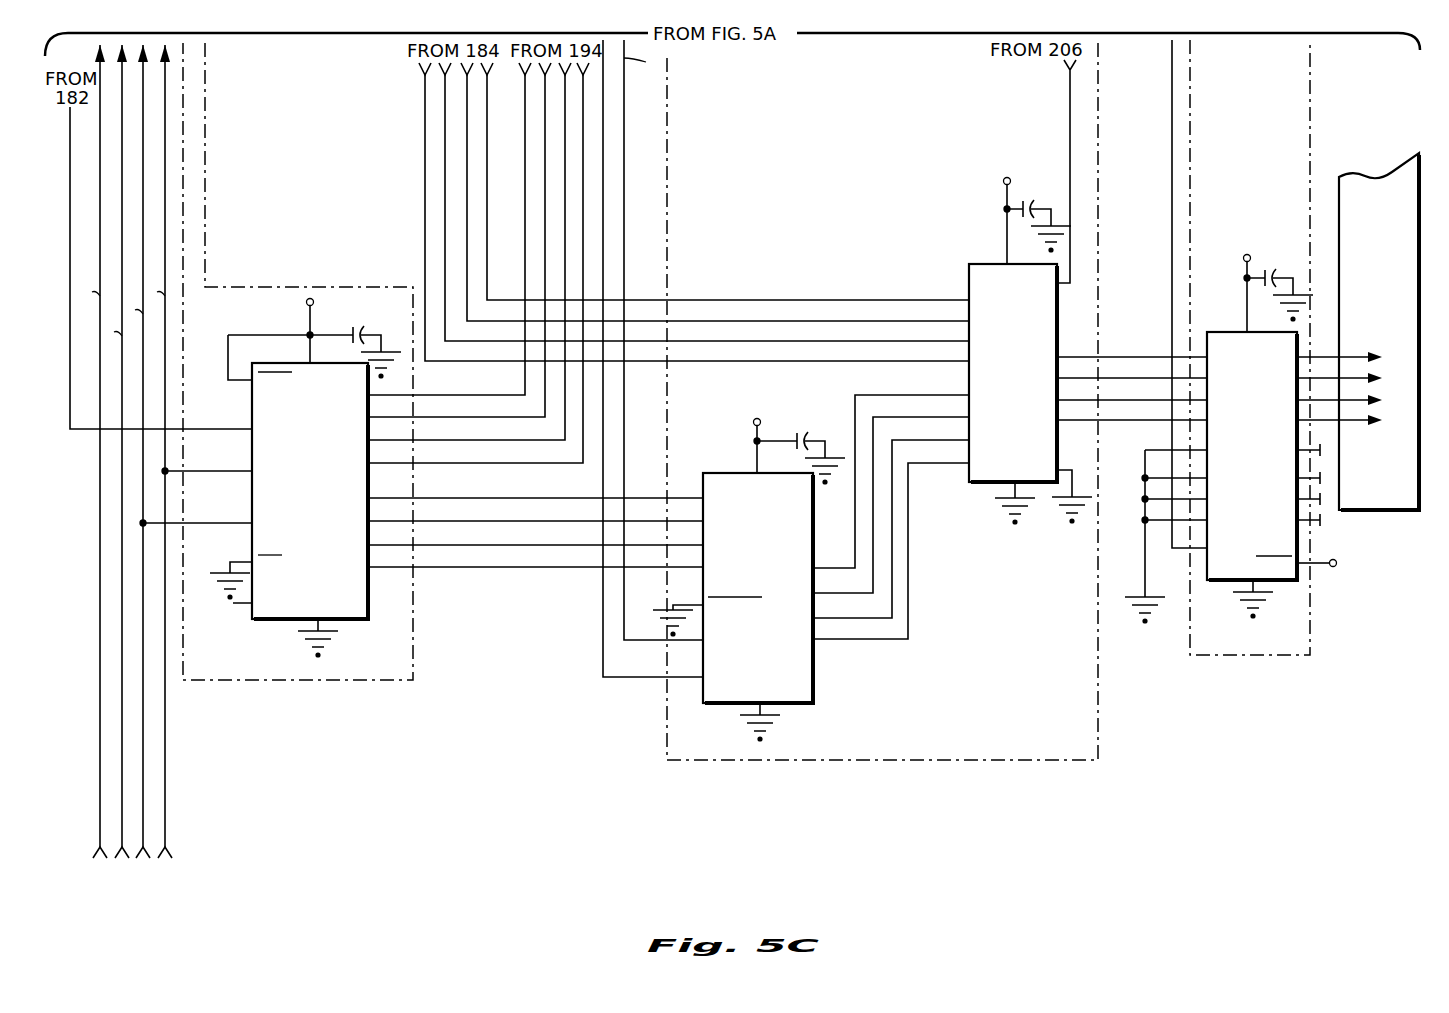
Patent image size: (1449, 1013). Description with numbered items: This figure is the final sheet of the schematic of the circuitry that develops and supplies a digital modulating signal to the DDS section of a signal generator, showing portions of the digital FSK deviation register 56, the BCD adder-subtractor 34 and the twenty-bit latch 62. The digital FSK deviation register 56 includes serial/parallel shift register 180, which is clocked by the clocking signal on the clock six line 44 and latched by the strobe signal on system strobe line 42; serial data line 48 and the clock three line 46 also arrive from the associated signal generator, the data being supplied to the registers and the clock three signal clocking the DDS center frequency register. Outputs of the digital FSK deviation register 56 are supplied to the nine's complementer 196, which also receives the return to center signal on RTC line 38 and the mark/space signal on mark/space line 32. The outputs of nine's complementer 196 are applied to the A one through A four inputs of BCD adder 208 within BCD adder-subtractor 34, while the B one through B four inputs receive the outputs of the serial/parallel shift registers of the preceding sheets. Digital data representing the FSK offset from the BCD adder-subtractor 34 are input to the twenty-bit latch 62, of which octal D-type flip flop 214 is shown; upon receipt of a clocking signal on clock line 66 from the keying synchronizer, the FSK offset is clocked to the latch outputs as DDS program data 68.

The mark/space line 32 is at (624, 94).
The BCD adder-subtractor 34 is at (875, 760).
The RTC line 38 is at (603, 137).
The system strobe line 42 is at (143, 826).
The clock 6 line 44 is at (165, 775).
The clock 3 line 46 is at (100, 820).
The serial data line 48 is at (122, 768).
The digital FSK deviation register 56 is at (270, 680).
The 20-bit latch 62 is at (1268, 655).
The clock line 66 is at (1170, 50).
The DDS program data 68 is at (1417, 147).
The serial/parallel shift register 180 is at (347, 620).
The 9's complementer 196 is at (725, 704).
The BCD adder 208 is at (985, 483).
The octal D-type flip flop 214 is at (1281, 581).